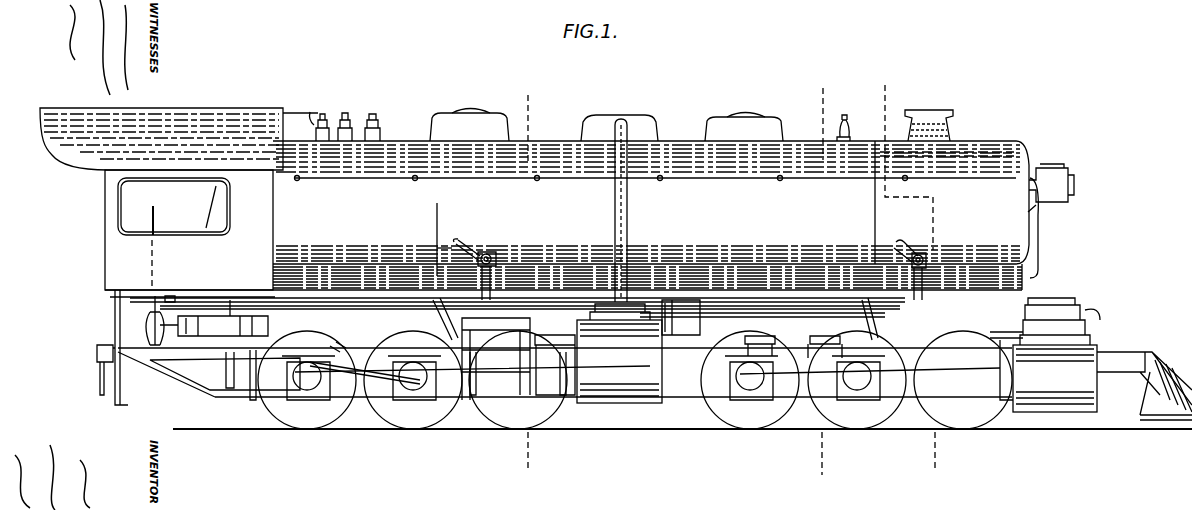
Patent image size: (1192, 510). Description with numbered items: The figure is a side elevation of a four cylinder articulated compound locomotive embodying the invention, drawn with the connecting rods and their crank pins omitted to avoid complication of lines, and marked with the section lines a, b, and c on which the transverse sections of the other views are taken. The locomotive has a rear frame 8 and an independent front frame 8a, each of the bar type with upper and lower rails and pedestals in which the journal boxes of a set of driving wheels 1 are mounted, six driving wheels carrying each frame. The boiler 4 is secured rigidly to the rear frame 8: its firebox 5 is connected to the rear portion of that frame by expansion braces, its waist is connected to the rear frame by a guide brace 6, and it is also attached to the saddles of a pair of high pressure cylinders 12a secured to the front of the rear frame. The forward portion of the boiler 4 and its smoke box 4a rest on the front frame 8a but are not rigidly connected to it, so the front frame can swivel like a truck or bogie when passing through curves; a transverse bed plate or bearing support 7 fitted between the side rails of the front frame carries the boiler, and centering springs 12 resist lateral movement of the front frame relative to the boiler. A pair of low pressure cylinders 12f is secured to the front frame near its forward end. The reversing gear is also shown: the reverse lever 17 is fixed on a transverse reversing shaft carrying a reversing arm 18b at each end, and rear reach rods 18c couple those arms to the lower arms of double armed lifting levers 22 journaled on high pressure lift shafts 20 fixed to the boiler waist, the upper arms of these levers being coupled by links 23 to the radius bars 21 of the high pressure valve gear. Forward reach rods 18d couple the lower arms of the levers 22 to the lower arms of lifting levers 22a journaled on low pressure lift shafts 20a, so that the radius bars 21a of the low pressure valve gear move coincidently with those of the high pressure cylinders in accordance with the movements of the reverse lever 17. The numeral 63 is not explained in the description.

The driving wheels 1 is at (330, 424).
The boiler 4 is at (673, 200).
The smoke box 4a is at (947, 179).
The firebox 5 is at (240, 202).
The guide brace 6 is at (486, 325).
The transverse bed plate or bearing support 7 is at (822, 337).
The rear frame 8 is at (330, 335).
The front frame 8a is at (750, 336).
The centering springs 12 is at (660, 310).
The high pressure cylinders 12a is at (619, 353).
The low pressure cylinders 12f is at (1045, 355).
The reverse lever 17 is at (158, 214).
The reversing arm 18b is at (150, 316).
The rear reach rods 18c is at (322, 298).
The forward reach rods 18d is at (745, 312).
The high pressure lift shafts 20 is at (496, 258).
The low pressure lift shafts 20a is at (928, 258).
The radius bars 21 is at (434, 300).
The radius bars 21a is at (862, 300).
The double armed lifting lever 22 is at (470, 244).
The double armed lifting lever 22a is at (903, 243).
The links 23 is at (437, 250).
The vertical pipe 63 is at (615, 216).
The section line aa a is at (525, 282).
The section line bb b is at (907, 280).
The section line cc c is at (819, 283).